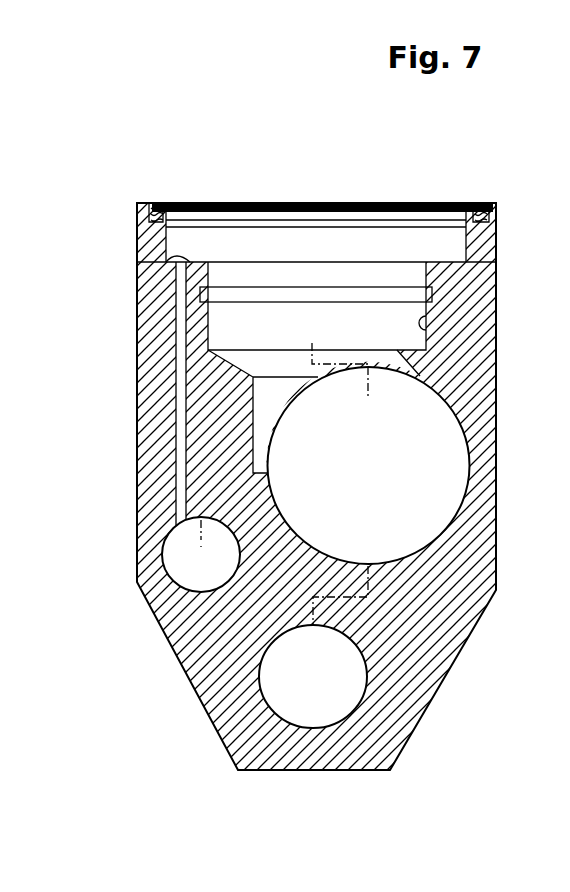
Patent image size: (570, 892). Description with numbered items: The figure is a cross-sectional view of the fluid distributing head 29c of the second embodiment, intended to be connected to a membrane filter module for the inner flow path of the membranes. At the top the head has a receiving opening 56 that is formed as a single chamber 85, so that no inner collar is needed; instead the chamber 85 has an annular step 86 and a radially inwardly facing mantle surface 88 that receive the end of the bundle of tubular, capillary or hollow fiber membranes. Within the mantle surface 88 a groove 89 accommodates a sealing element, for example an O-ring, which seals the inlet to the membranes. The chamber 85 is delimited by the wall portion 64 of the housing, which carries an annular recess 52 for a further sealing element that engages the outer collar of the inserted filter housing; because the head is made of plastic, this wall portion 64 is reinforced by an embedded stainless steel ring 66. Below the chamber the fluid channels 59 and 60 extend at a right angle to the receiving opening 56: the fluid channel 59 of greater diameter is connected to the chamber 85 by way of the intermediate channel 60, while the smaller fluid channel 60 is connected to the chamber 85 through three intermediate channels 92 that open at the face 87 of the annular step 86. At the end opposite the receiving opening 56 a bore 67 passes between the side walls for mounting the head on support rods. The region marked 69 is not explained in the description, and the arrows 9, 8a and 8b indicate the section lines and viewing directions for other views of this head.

The recess 52 is at (182, 205).
The receiving opening 56 is at (362, 237).
The fluid channel 59 is at (450, 484).
The fluid channel 60 is at (180, 558).
The wall portion 64 is at (152, 238).
The stainless steel ring 66 is at (496, 206).
The bore 67 is at (347, 701).
The chamber 69 is at (257, 406).
The chamber 85 is at (378, 312).
The annular step 86 is at (212, 256).
The face 87 is at (182, 257).
The mantle surface 88 is at (420, 337).
The groove 89 is at (430, 293).
The intermediate channels 92 is at (184, 436).
The fluid distributing head 29c is at (222, 145).
The direction arrow 9 is at (317, 88).
The section line 8a is at (185, 200).
The section line 8b is at (316, 200).